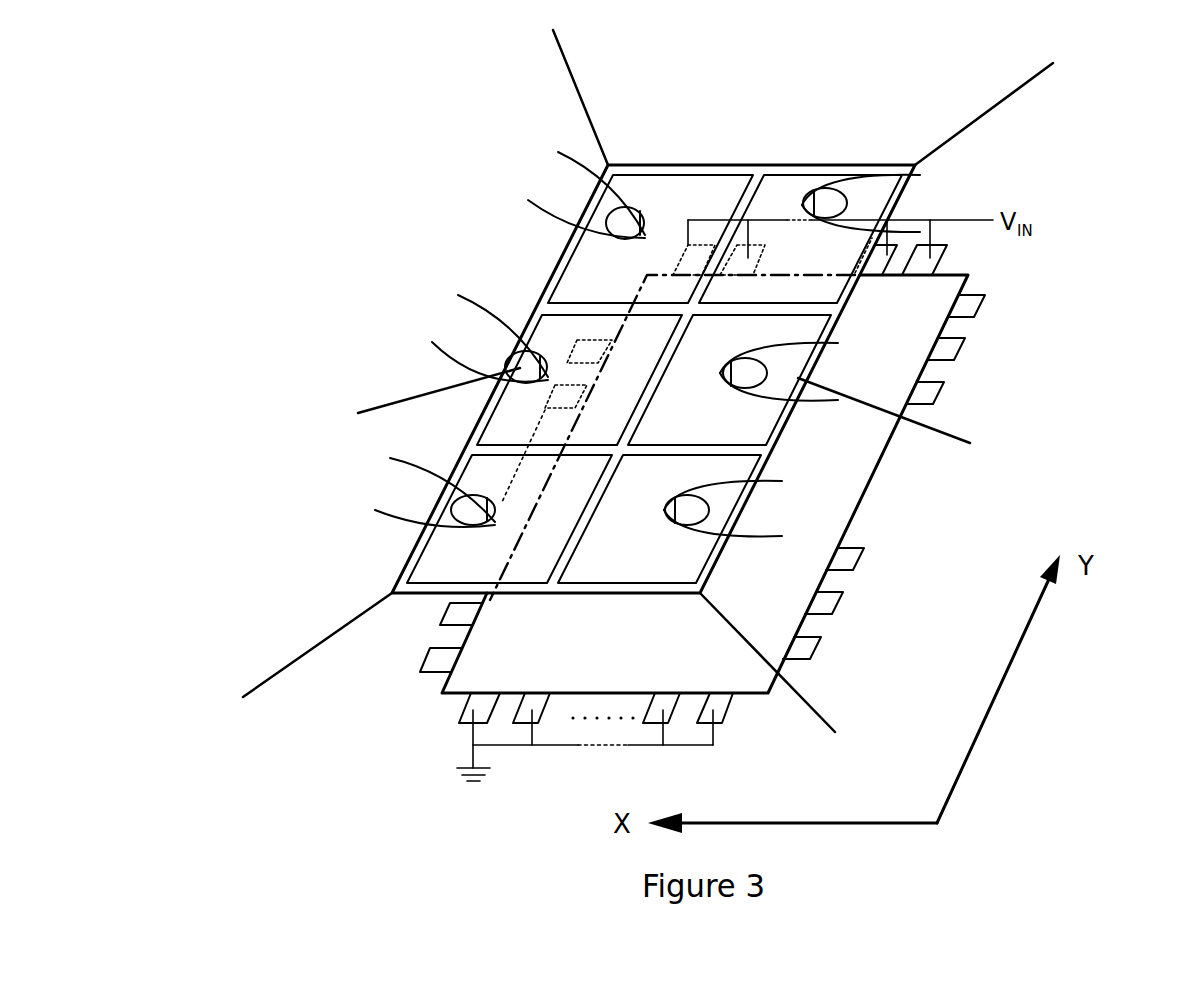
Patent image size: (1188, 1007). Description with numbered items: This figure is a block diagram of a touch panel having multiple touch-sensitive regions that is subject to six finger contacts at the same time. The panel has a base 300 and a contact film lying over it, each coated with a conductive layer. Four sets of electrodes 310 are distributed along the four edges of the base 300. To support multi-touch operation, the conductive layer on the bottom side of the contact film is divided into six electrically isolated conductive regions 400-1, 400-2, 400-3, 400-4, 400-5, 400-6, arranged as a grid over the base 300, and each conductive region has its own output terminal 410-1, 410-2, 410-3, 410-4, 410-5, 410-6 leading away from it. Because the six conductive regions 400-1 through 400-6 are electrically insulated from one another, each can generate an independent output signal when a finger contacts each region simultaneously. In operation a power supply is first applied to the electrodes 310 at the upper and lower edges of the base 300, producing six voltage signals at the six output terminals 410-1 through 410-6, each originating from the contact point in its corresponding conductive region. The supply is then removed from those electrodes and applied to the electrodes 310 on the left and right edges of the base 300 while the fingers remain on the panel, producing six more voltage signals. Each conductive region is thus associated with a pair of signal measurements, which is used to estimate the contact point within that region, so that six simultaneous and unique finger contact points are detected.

The base 300 is at (615, 676).
The sets of electrodes 310 is at (795, 663).
The conductive region 400-1 is at (654, 303).
The conductive region 400-2 is at (805, 301).
The conductive region 400-3 is at (587, 441).
The conductive region 400-4 is at (737, 442).
The conductive region 400-5 is at (524, 582).
The conductive region 400-6 is at (674, 582).
The output terminal 410-1 is at (568, 63).
The output terminal 410-2 is at (1017, 90).
The output terminal 410-3 is at (410, 397).
The output terminal 410-4 is at (917, 420).
The output terminal 410-5 is at (333, 633).
The output terminal 410-6 is at (827, 718).